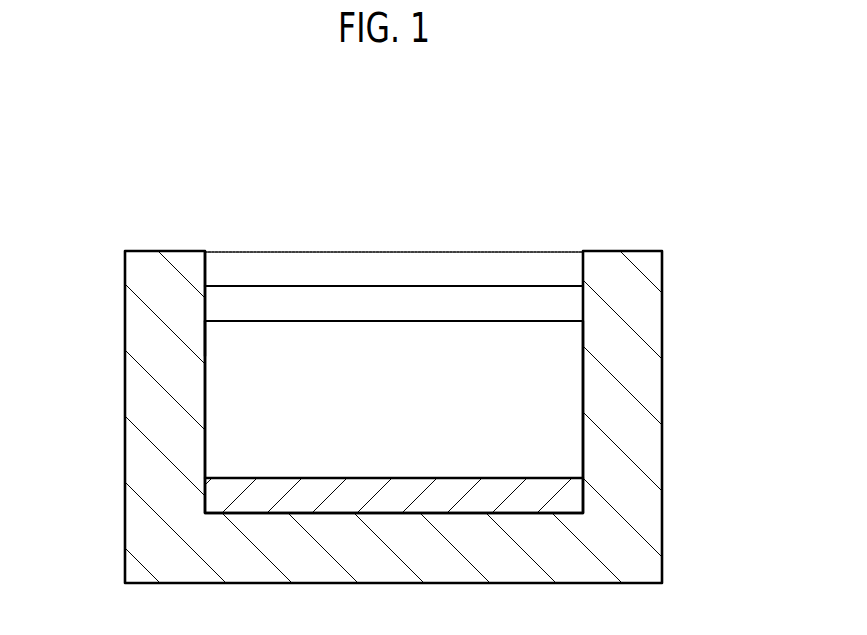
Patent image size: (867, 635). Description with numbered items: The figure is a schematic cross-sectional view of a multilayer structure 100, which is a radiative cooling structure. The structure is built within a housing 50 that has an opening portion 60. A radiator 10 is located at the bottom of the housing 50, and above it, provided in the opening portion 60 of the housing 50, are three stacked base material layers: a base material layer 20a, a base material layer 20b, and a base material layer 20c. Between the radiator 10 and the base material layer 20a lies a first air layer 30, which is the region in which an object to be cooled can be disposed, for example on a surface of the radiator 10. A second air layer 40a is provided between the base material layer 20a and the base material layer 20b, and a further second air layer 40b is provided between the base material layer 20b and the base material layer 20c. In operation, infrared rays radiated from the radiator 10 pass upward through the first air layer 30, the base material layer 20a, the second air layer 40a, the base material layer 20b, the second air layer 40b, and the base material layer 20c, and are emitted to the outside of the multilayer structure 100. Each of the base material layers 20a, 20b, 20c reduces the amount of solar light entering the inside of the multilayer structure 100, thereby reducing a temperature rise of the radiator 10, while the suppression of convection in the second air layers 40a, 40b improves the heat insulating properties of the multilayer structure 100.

The multilayer structure 100 is at (593, 183).
The housing 50 is at (568, 556).
The radiator 10 is at (563, 498).
The first air layer 30 is at (563, 409).
The second air layer 40a is at (563, 304).
The second air layer 40b is at (563, 269).
The opening portion 60 is at (205, 262).
The base material layer 20a is at (238, 327).
The base material layer 20b is at (238, 291).
The base material layer 20c is at (238, 257).